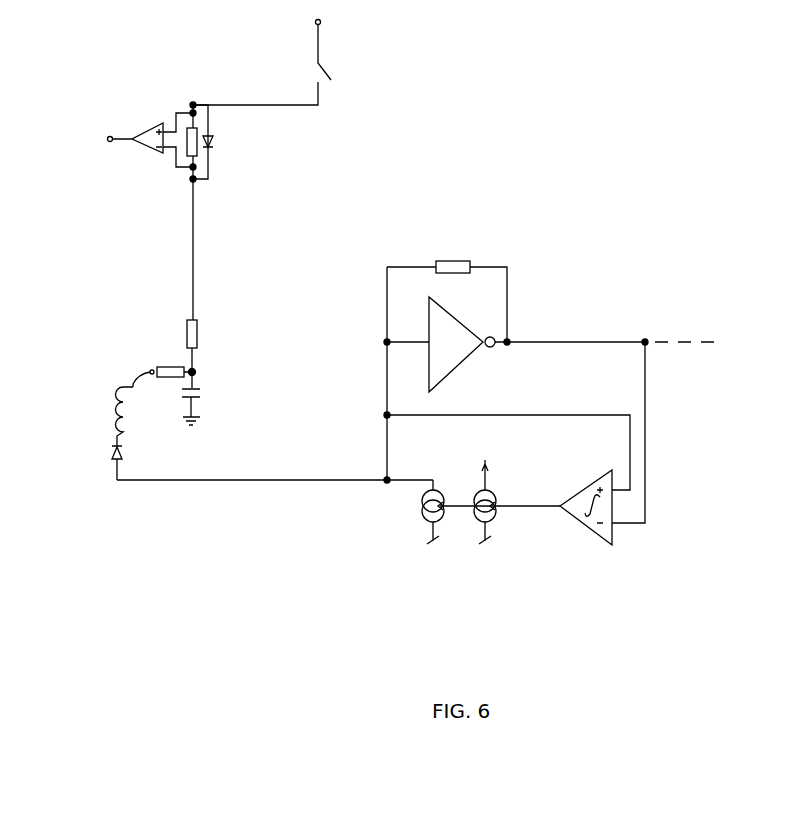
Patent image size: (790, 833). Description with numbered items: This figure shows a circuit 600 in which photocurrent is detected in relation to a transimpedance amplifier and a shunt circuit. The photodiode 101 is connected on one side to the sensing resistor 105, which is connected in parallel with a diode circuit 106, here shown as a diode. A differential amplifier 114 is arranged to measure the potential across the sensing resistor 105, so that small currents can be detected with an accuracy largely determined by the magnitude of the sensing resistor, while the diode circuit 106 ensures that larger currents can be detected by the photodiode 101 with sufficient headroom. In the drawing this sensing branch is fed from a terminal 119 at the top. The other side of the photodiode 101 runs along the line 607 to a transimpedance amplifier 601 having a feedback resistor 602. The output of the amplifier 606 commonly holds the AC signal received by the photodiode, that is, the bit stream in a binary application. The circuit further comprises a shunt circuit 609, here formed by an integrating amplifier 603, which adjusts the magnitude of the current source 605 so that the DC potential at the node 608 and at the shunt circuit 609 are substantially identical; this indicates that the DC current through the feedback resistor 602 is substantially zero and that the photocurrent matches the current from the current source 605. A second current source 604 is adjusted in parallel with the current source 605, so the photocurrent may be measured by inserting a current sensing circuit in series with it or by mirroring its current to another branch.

The bias terminal switch 119 is at (322, 22).
The circuit 600 is at (171, 87).
The differential amplifier 114 is at (131, 145).
The sensing resistor 105 is at (186, 147).
The diode circuit 106 is at (218, 161).
The photodiode 101 is at (112, 452).
The signal line 607 is at (302, 483).
The node 608 is at (386, 388).
The feedback resistor 602 is at (432, 256).
The transimpedance amplifier 601 is at (473, 358).
The output of the amplifier 606 is at (605, 330).
The shunt circuit 609 is at (628, 560).
The integrator amplifier 603 is at (584, 531).
The second current source 604 is at (475, 519).
The current source 605 is at (422, 522).